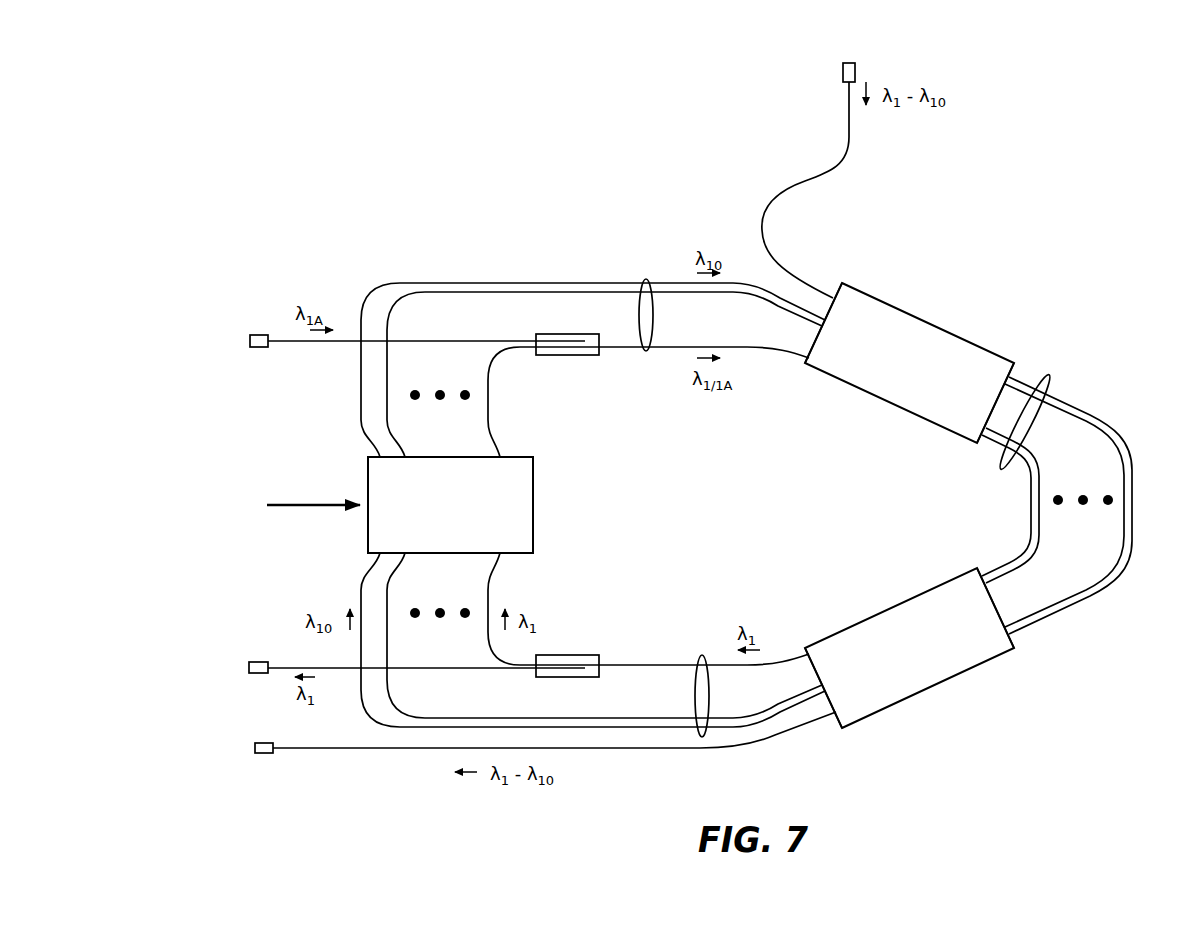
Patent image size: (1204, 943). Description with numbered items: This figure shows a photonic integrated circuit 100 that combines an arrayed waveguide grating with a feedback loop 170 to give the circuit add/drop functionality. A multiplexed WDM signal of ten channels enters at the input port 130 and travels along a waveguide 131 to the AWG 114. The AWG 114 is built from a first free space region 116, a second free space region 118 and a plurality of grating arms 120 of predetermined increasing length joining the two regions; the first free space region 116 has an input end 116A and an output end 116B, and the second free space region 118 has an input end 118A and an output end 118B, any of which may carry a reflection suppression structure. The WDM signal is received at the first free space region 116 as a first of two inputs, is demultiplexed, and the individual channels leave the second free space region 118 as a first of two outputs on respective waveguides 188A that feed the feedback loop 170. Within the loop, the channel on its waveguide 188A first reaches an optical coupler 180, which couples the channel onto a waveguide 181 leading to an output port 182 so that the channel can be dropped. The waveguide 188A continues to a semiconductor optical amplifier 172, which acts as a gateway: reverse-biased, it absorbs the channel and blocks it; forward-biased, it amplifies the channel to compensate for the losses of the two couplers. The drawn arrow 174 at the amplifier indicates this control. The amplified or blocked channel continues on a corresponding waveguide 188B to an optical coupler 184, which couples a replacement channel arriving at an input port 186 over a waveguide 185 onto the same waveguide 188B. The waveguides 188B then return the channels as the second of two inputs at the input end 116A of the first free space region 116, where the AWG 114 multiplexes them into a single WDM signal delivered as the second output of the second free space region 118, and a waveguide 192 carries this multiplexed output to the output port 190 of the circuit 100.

The photonic integrated circuit 100 is at (508, 131).
The AWG 114 is at (1140, 388).
The first free space region 116 is at (923, 330).
The input end of first free space region 116A is at (838, 283).
The output end of first free space region 116B is at (1021, 368).
The second free space region 118 is at (930, 670).
The input end of second free space region 118A is at (1015, 645).
The output end of second free space region 118B is at (831, 728).
The grating arms 120 is at (1039, 374).
The input port 130 is at (843, 62).
The waveguide 131 is at (783, 190).
The feedback loop 170 is at (304, 262).
The semiconductor optical amplifier 172 is at (467, 495).
The control input 174 is at (305, 504).
The optical coupler 180 is at (596, 654).
The waveguide 181 is at (303, 666).
The output port 182 is at (254, 661).
The optical coupler 184 is at (557, 333).
The waveguide 185 is at (294, 340).
The input port 186 is at (252, 335).
The waveguides 188A is at (702, 738).
The waveguides 188B is at (646, 280).
The output port 190 is at (258, 744).
The waveguide 192 is at (346, 749).